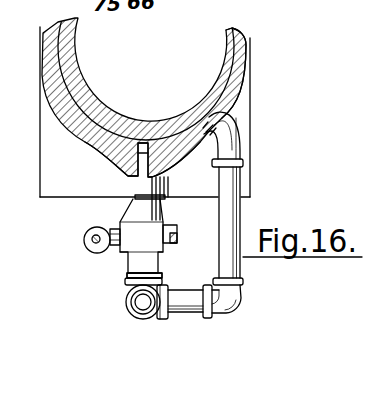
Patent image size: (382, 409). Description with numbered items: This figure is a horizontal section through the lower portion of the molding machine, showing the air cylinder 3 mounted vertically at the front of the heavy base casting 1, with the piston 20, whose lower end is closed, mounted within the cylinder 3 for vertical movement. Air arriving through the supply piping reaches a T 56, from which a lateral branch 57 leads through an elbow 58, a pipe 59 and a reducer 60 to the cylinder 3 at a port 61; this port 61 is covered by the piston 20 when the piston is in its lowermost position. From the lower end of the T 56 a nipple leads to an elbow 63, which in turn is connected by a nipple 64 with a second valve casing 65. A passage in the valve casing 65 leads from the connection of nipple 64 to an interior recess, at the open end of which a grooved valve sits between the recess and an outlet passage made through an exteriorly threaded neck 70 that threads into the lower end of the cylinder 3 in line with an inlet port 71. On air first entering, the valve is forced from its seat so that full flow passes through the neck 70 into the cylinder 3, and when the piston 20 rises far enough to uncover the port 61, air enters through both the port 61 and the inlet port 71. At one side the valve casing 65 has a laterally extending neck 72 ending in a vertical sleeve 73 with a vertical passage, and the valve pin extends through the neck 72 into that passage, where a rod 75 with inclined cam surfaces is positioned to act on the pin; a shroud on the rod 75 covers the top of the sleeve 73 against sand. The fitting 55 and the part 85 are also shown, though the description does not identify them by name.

The base casting 1 is at (251, 137).
The air cylinder 3 is at (248, 59).
The piston 20 is at (165, 98).
The tee fitting 55 is at (141, 319).
The T 56 is at (159, 320).
The lateral branch 57 is at (183, 297).
The elbow 58 is at (231, 313).
The pipe 59 is at (234, 218).
The reducer 60 is at (244, 156).
The port 61 is at (217, 112).
The elbow 63 is at (129, 287).
The nipple 64 is at (128, 277).
The valve casing 65 is at (147, 243).
The neck 70 is at (158, 205).
The inlet port 71 is at (123, 168).
The neck 72 is at (131, 214).
The sleeve 73 is at (85, 245).
The rod 75 is at (94, 243).
The upper member 85 is at (73, 8).